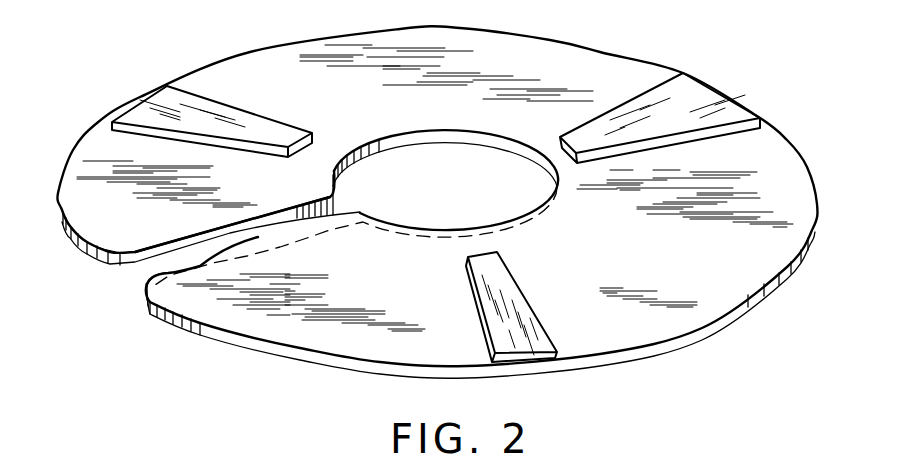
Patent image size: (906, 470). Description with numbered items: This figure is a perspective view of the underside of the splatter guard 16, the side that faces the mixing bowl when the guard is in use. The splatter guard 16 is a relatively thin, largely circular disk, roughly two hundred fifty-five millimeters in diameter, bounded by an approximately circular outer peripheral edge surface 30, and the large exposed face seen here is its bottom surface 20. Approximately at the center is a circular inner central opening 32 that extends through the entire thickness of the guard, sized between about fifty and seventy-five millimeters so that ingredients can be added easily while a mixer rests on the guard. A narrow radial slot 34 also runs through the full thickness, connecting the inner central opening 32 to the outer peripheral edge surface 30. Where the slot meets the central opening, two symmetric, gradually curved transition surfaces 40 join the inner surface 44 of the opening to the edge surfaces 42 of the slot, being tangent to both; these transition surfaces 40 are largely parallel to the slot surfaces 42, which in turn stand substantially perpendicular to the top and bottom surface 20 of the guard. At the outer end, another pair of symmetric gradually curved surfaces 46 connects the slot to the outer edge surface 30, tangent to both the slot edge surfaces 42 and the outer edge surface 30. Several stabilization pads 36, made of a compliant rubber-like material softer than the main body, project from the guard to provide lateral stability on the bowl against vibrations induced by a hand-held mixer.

The splatter guard 16 is at (267, 327).
The bottom surface 20 is at (387, 345).
The outer peripheral edge surface 30 is at (702, 330).
The inner central opening 32 is at (450, 153).
The narrow radial slot 34 is at (202, 260).
The stabilization pads 36 is at (147, 103).
The gradually curved transition surfaces 40 is at (340, 200).
The edge surfaces of narrow radial slot 42 is at (157, 248).
The inner surface of central opening 44 is at (380, 147).
The symmetric gradually curved surfaces 46 is at (143, 285).